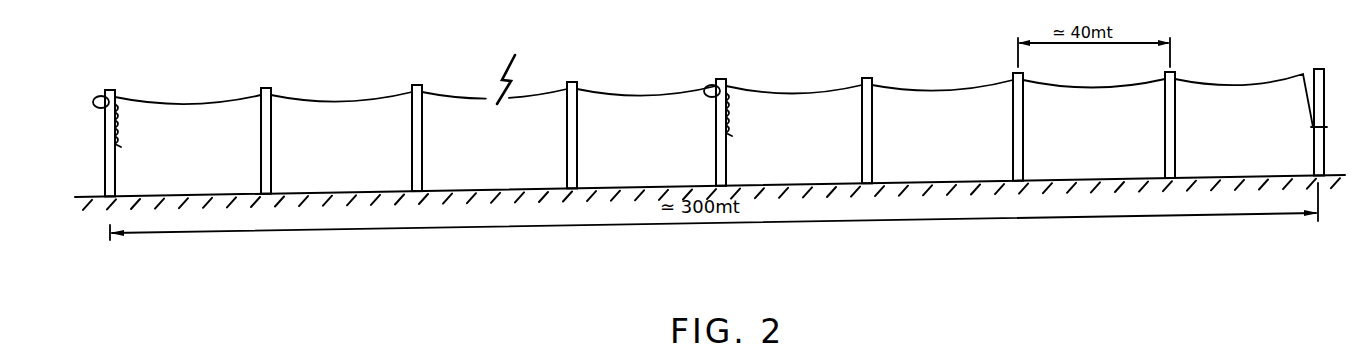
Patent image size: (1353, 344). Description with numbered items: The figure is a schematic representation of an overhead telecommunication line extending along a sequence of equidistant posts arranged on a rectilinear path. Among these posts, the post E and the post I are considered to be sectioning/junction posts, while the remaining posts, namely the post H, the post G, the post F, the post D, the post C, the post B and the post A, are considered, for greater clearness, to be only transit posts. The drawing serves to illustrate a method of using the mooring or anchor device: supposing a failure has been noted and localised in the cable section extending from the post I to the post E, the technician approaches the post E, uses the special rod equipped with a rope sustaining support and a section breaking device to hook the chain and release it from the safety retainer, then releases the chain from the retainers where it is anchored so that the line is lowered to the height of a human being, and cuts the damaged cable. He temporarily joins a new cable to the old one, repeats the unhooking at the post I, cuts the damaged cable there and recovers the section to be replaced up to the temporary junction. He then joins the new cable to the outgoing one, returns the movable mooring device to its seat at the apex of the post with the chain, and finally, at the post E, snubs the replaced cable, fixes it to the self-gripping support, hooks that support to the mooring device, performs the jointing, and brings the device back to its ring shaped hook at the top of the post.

The sectioning/junction post I is at (107, 187).
The transit post H is at (265, 185).
The transit post G is at (417, 182).
The transit post F is at (571, 179).
The sectioning/junction post E is at (718, 176).
The transit post D is at (867, 174).
The transit post C is at (1018, 171).
The transit post B is at (1170, 169).
The transit post A is at (1319, 166).